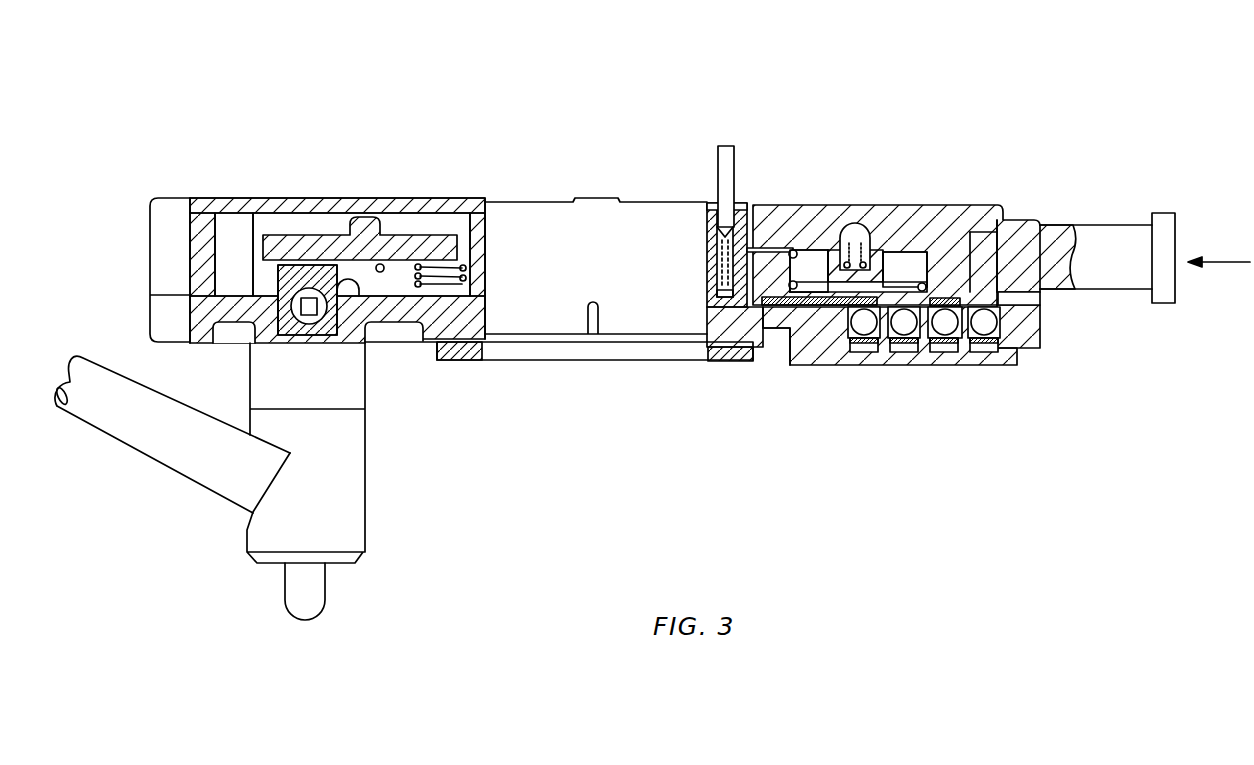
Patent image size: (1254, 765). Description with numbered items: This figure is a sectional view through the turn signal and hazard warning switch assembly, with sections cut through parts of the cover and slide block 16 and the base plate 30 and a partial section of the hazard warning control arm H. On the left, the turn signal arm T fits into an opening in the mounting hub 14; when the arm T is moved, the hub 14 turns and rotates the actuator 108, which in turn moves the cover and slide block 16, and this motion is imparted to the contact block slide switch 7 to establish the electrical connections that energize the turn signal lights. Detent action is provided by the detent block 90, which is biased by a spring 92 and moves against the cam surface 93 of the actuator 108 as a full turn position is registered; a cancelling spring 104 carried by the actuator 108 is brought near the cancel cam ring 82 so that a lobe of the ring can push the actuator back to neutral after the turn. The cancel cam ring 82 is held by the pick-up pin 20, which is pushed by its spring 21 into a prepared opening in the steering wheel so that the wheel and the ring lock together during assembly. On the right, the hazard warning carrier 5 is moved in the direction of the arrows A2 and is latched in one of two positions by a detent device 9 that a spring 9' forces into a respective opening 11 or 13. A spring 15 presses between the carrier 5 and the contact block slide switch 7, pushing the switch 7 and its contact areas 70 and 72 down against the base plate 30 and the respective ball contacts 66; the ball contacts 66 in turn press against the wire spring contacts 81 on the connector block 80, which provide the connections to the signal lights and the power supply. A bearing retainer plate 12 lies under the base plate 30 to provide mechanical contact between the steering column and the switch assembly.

The hazard warning carrier 5 is at (950, 268).
The contact block slide switch 7 is at (1058, 224).
The detent device 9 is at (871, 214).
The spring 9' is at (898, 174).
The opening 11 is at (860, 207).
The bearing retainer plate 12 is at (458, 360).
The opening 13 is at (875, 228).
The mounting hub 14 is at (365, 538).
The spring 15 is at (792, 250).
The cover and slide block 16 is at (383, 198).
The pick-up pin 20 is at (727, 147).
The spring 21 is at (706, 285).
The base plate 30 is at (190, 316).
The ball contacts 66 is at (1003, 350).
The contact area 70 is at (768, 347).
The contact area 72 is at (1042, 300).
The connector block 80 is at (815, 365).
The wire spring contacts 81 is at (937, 345).
The cancel cam ring 82 is at (490, 278).
The detent block 90 is at (278, 297).
The spring 92 is at (300, 290).
The cam surface 93 is at (278, 296).
The cancelling spring 104 is at (490, 222).
The actuator 108 is at (445, 238).
The hazard warning control arm H is at (1128, 225).
The turn signal arm T is at (105, 436).
The arrow A2 is at (1219, 275).